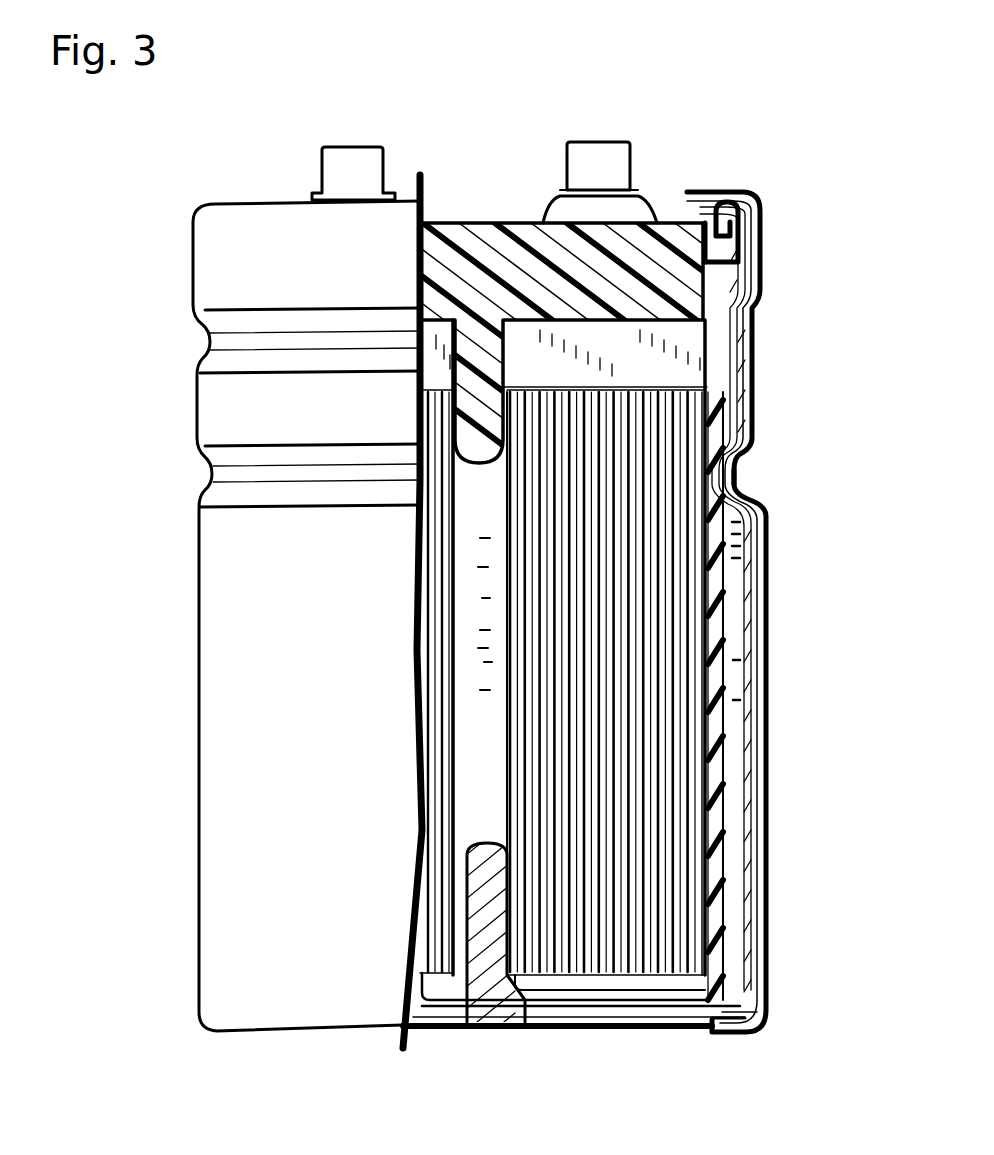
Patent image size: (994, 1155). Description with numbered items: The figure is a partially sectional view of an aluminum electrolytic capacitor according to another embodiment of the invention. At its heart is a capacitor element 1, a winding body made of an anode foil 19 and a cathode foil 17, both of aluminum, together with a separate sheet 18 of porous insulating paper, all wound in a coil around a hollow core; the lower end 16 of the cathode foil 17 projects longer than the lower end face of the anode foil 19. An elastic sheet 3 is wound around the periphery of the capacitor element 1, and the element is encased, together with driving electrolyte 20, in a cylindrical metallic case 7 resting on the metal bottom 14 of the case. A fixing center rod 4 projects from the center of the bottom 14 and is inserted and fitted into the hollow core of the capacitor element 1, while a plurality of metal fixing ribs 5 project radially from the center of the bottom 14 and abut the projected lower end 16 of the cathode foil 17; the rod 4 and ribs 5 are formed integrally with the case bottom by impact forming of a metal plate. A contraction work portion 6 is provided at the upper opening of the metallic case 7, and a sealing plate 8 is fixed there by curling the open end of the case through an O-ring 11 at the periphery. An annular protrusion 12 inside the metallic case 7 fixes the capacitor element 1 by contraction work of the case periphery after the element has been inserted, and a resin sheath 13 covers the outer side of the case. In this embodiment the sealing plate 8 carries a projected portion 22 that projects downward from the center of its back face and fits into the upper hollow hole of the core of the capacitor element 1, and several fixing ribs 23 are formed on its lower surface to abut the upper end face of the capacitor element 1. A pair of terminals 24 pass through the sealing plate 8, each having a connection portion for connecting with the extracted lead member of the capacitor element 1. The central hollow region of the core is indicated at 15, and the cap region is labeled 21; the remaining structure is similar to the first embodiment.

The capacitor element 1 is at (692, 815).
The elastic sheet 3 is at (710, 680).
The fixing center rod 4 is at (490, 963).
The fixing ribs 5 is at (418, 1010).
The contraction work portion 6 is at (748, 332).
The metallic case 7 is at (762, 605).
The sealing plate 8 is at (657, 260).
The O-ring 11 is at (740, 236).
The annular protrusion 12 is at (741, 467).
The resin sheath 13 is at (762, 992).
The bottom 14 is at (612, 1028).
The center space 15 is at (480, 722).
The lower end of the cathode foil 16 is at (565, 985).
The cathode foil 17 is at (660, 950).
The separate sheet 18 is at (675, 882).
The anode foil 19 is at (655, 728).
The driving electrolyte 20 is at (737, 532).
The cap assembly 21 is at (513, 240).
The projected portion 22 is at (465, 445).
The fixing ribs 23 is at (688, 362).
The terminals 24 is at (360, 160).